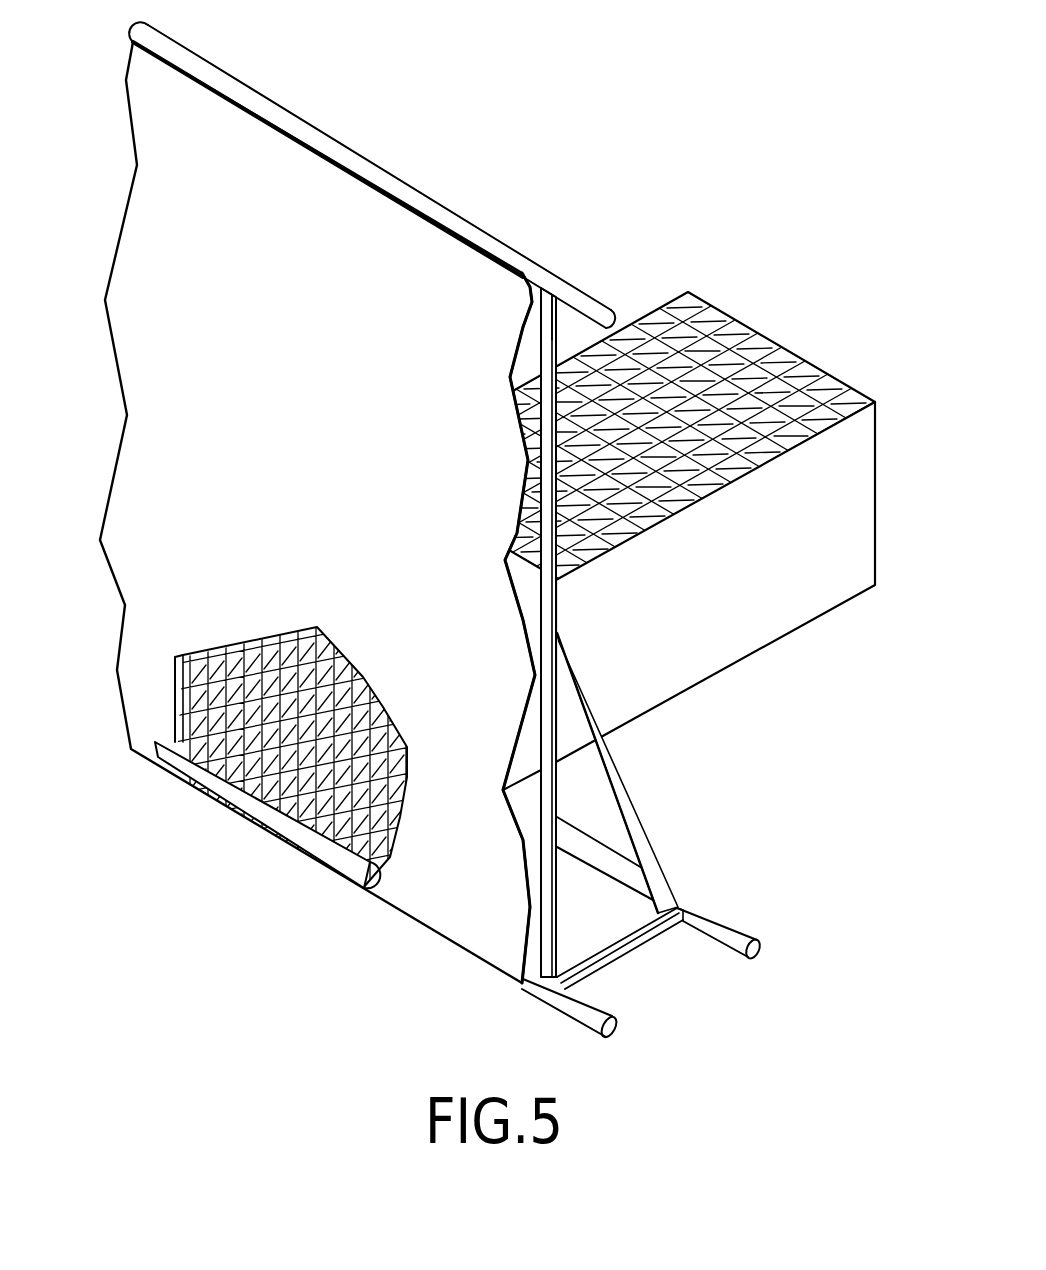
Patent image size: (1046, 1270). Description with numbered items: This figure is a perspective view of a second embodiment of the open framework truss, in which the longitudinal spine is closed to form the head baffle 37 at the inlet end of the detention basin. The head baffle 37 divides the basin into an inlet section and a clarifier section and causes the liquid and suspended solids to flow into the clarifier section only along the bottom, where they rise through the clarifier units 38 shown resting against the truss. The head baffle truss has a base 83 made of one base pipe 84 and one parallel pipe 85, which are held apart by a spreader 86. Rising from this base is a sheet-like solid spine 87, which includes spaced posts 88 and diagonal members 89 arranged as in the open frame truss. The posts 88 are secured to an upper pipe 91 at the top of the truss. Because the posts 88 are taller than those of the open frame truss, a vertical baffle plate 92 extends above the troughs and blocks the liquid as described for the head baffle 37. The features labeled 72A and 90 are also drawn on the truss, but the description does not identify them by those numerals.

The head baffle 37 is at (190, 314).
The clarifier units 38 is at (782, 353).
The post connector 72A is at (548, 322).
The base 83 is at (262, 817).
The base pipe 84 is at (725, 930).
The parallel pipe 85 is at (600, 1010).
The spreader 86 is at (642, 937).
The solid spine 87 is at (572, 697).
The posts 88 is at (553, 790).
The diagonal members 89 is at (210, 743).
The diagonal brace 90 is at (655, 877).
The upper pipe 91 is at (532, 267).
The vertical baffle plate 92 is at (442, 263).